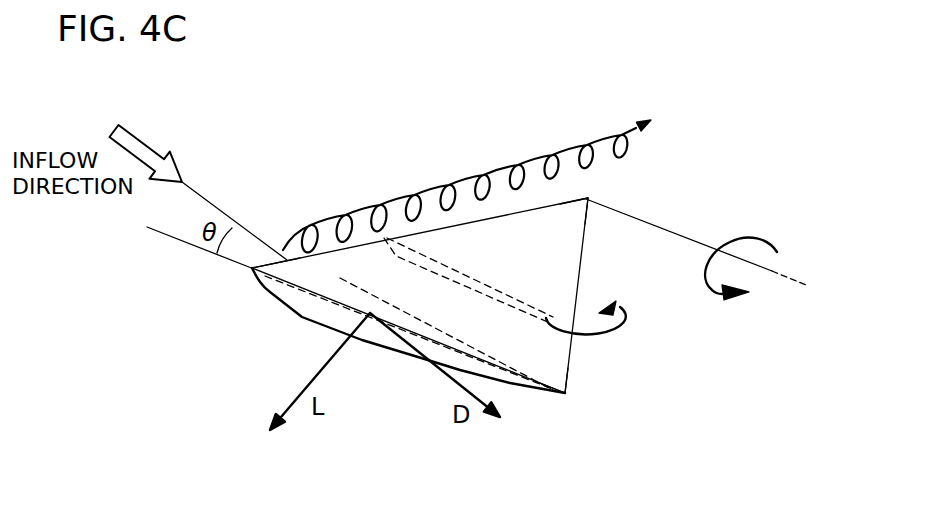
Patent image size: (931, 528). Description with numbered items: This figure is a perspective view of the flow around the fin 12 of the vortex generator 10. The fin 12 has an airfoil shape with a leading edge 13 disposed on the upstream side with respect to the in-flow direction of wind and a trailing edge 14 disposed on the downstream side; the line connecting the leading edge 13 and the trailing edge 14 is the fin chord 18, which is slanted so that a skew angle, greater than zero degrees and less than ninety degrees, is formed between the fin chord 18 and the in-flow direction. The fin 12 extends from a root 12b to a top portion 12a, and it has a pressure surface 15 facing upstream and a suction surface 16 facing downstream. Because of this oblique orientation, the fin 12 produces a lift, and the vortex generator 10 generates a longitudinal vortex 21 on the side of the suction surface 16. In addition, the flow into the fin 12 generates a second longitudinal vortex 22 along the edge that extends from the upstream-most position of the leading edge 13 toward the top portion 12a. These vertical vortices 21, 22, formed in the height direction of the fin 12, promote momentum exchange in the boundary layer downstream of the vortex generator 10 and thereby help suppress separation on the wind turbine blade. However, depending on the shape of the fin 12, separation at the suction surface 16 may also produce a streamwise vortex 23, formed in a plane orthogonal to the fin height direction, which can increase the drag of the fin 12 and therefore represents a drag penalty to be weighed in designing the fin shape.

The vortex generator 10 is at (702, 178).
The fin 12 is at (582, 267).
The top portion 12a is at (590, 198).
The root 12b is at (529, 394).
The leading edge 13 is at (242, 266).
The trailing edge 14 is at (568, 396).
The pressure surface 15 is at (578, 376).
The suction surface 16 is at (312, 322).
The fin chord 18 is at (272, 298).
The longitudinal vortex 21 is at (741, 242).
The longitudinal vortex 22 is at (500, 167).
The streamwise vortex 23 is at (628, 330).